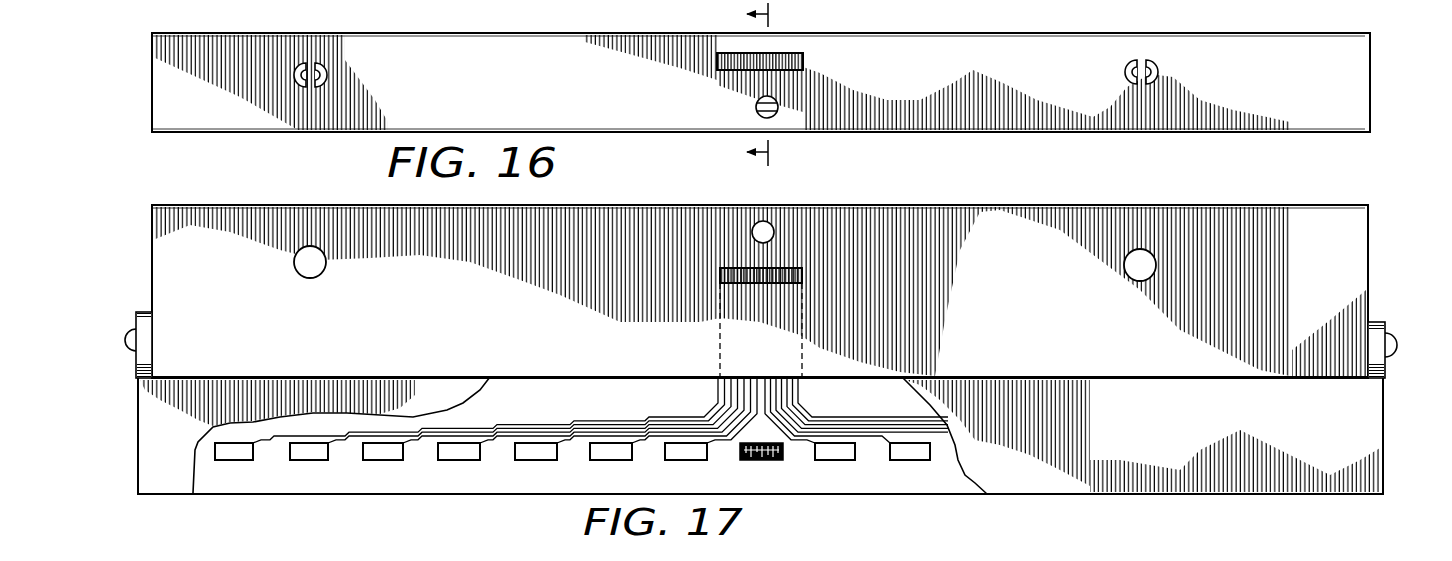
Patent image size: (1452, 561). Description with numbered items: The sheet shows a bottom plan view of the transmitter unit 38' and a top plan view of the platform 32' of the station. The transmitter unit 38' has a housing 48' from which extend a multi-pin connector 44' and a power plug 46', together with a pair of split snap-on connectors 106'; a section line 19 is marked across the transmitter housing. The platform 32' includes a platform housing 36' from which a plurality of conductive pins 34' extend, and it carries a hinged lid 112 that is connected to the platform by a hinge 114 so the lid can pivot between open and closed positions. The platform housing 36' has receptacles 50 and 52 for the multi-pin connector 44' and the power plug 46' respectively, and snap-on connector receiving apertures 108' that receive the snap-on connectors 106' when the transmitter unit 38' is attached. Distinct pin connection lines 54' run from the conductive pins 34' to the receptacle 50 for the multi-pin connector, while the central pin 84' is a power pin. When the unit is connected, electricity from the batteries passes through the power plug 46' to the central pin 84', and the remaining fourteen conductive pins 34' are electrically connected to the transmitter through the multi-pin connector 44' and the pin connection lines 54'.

In FIG. 16, the transmitter unit 38' is at (761, 66).
In FIG. 16, the housing 48' is at (761, 19).
In FIG. 16, the multi-pin connector 44' is at (790, 39).
In FIG. 16, the power plug 46' is at (795, 105).
In FIG. 16, the split snap-on connectors 106' is at (752, 68).
In FIG. 16, the section line 19 is at (775, 84).
In FIG. 17, the platform housing 36' is at (788, 307).
In FIG. 17, the hinged lid 112 is at (1358, 449).
In FIG. 17, the snap-on connector receiving apertures 108' is at (755, 267).
In FIG. 17, the receptacle 52 is at (772, 223).
In FIG. 17, the receptacle 50 is at (805, 276).
In FIG. 17, the hinge 114 is at (127, 341).
In FIG. 17, the platform 32' is at (1396, 339).
In FIG. 17, the pin connection lines 54' is at (600, 410).
In FIG. 17, the conductive pins 34' is at (572, 466).
In FIG. 17, the central pin 84' is at (761, 466).